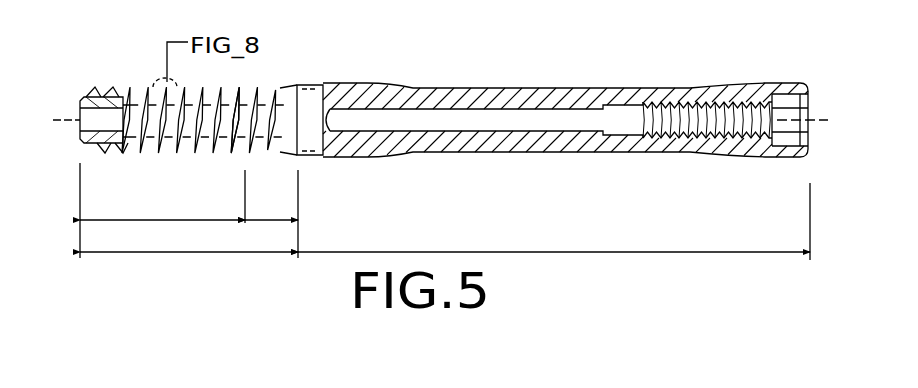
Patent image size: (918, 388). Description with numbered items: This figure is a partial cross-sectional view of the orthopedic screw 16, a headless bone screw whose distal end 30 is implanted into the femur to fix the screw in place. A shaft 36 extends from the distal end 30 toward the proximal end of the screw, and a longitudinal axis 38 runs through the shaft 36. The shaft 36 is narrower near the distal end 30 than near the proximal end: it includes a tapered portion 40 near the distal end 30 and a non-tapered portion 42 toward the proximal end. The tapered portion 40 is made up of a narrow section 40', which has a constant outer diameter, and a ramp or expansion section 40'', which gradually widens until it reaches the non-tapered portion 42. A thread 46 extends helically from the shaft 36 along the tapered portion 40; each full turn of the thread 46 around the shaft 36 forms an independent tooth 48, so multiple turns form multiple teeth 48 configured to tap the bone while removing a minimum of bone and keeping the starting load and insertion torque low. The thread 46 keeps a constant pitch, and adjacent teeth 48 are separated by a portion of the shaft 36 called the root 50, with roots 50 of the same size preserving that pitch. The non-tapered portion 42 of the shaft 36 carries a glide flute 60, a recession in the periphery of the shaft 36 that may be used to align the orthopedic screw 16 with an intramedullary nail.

The orthopedic screw 16 is at (660, 61).
The distal end 30 is at (72, 133).
The shaft 36 is at (357, 150).
The longitudinal axis 38 is at (66, 121).
The tapered portion 40 is at (189, 238).
The narrow section 40' is at (162, 205).
The ramp section 40'' is at (271, 205).
The non-tapered portion 42 is at (508, 252).
The thread 46 is at (172, 163).
The tooth 48 is at (222, 151).
The root 50 is at (212, 99).
The glide flute 60 is at (513, 153).